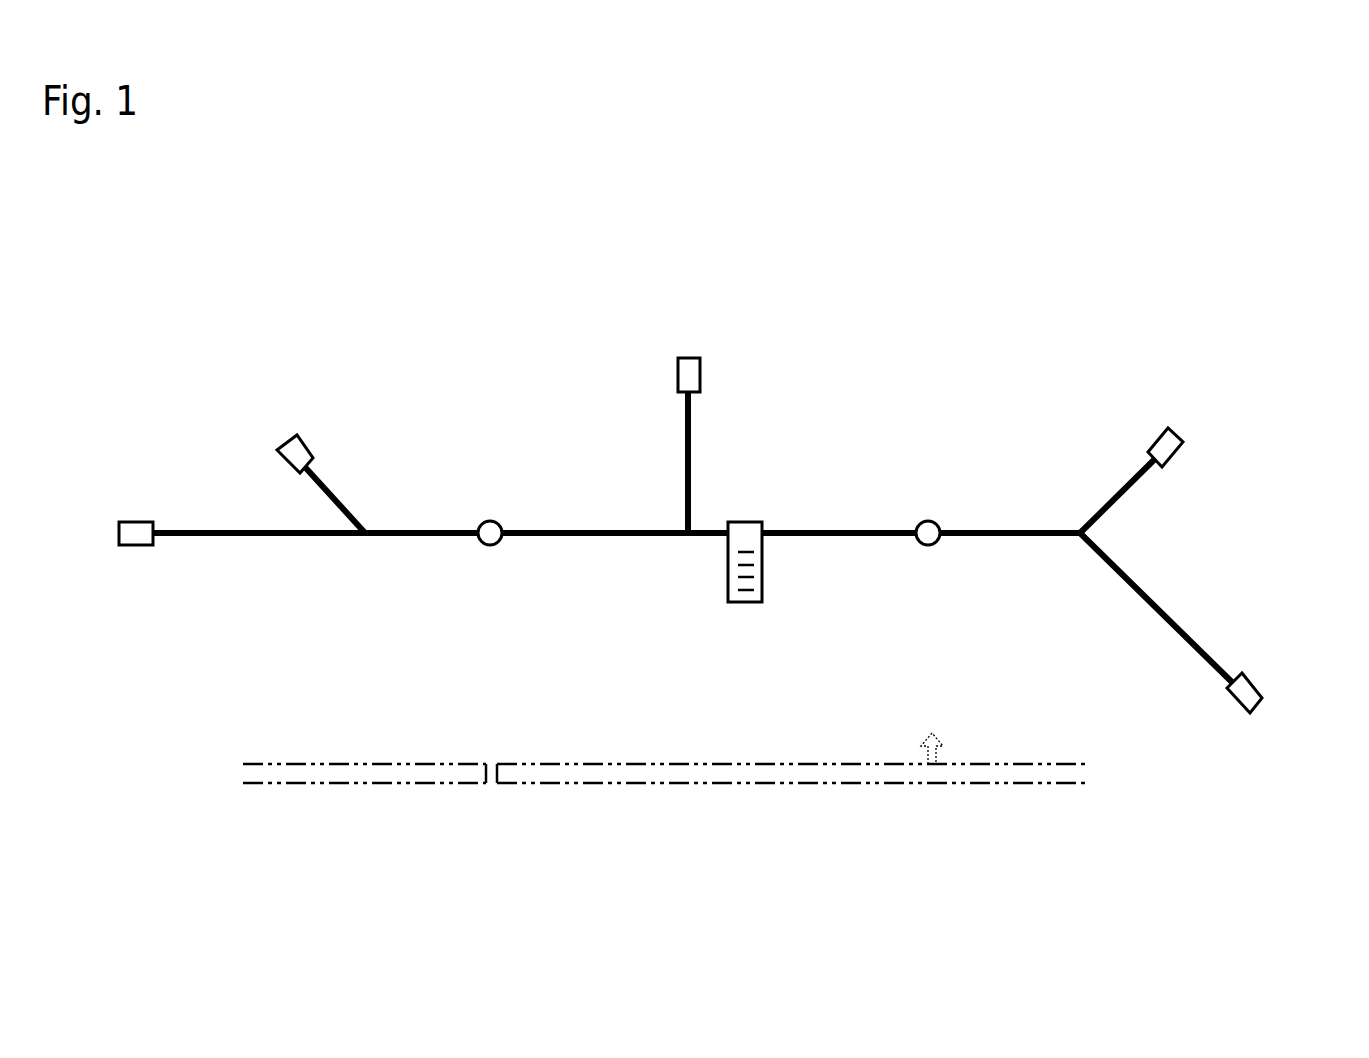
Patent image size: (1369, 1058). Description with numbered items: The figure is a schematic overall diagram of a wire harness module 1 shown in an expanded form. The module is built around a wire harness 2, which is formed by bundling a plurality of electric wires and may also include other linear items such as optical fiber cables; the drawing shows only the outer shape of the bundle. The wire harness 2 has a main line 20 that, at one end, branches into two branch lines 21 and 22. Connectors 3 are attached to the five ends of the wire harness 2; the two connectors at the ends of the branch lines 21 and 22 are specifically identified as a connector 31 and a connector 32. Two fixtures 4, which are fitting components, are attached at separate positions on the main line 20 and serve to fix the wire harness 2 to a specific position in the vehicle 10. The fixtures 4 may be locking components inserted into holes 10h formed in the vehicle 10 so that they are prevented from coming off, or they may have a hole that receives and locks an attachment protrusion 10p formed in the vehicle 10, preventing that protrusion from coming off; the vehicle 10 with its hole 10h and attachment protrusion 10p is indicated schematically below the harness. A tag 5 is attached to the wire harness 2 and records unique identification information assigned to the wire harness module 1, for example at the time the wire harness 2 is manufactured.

The wire harness module 1 is at (250, 311).
The wire harness 2 is at (628, 538).
The connector 3 is at (742, 508).
The connector 31 is at (141, 522).
The connector 32 is at (294, 436).
The fixture 4 is at (492, 546).
The tag 5 is at (748, 603).
The vehicle 10 is at (600, 790).
The hole 10h is at (489, 762).
The attachment protrusion 10p is at (938, 750).
The main line 20 is at (1078, 518).
The branch line 21 is at (253, 537).
The branch line 22 is at (348, 500).